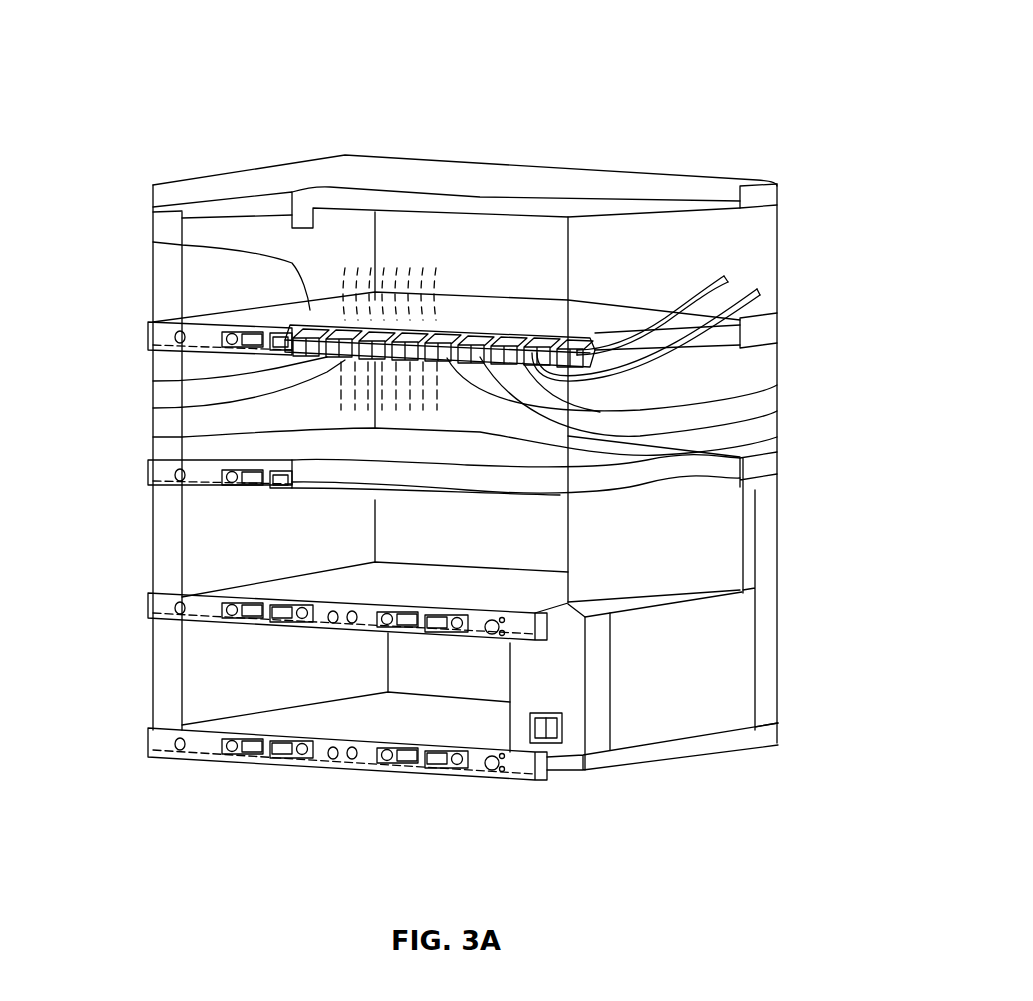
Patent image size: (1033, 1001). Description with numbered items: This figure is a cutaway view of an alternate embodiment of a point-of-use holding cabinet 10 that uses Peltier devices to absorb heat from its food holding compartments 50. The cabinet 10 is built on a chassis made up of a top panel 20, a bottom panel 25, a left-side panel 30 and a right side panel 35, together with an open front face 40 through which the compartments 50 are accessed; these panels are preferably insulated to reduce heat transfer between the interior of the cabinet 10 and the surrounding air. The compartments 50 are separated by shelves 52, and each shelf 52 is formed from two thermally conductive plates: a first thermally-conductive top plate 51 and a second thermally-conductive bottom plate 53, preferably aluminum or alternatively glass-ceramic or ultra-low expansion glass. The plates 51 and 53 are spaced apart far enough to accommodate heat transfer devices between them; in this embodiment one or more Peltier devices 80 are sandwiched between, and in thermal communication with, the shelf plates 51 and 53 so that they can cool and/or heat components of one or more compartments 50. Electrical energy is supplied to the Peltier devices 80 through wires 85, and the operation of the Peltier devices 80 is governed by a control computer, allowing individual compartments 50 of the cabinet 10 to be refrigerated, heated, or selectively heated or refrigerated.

The point-of-use holding cabinet 10 is at (664, 37).
The top panel 20 is at (677, 182).
The bottom panel 25 is at (657, 763).
The left-side panel 30 is at (137, 235).
The right side panel 35 is at (737, 657).
The open front face 40 is at (143, 775).
The food holding compartment 50 is at (455, 259).
The top plate 51 is at (507, 313).
The shelf 52 is at (153, 242).
The bottom plate 53 is at (153, 381).
The Peltier device 80 is at (820, 433).
The wire 85 is at (747, 292).